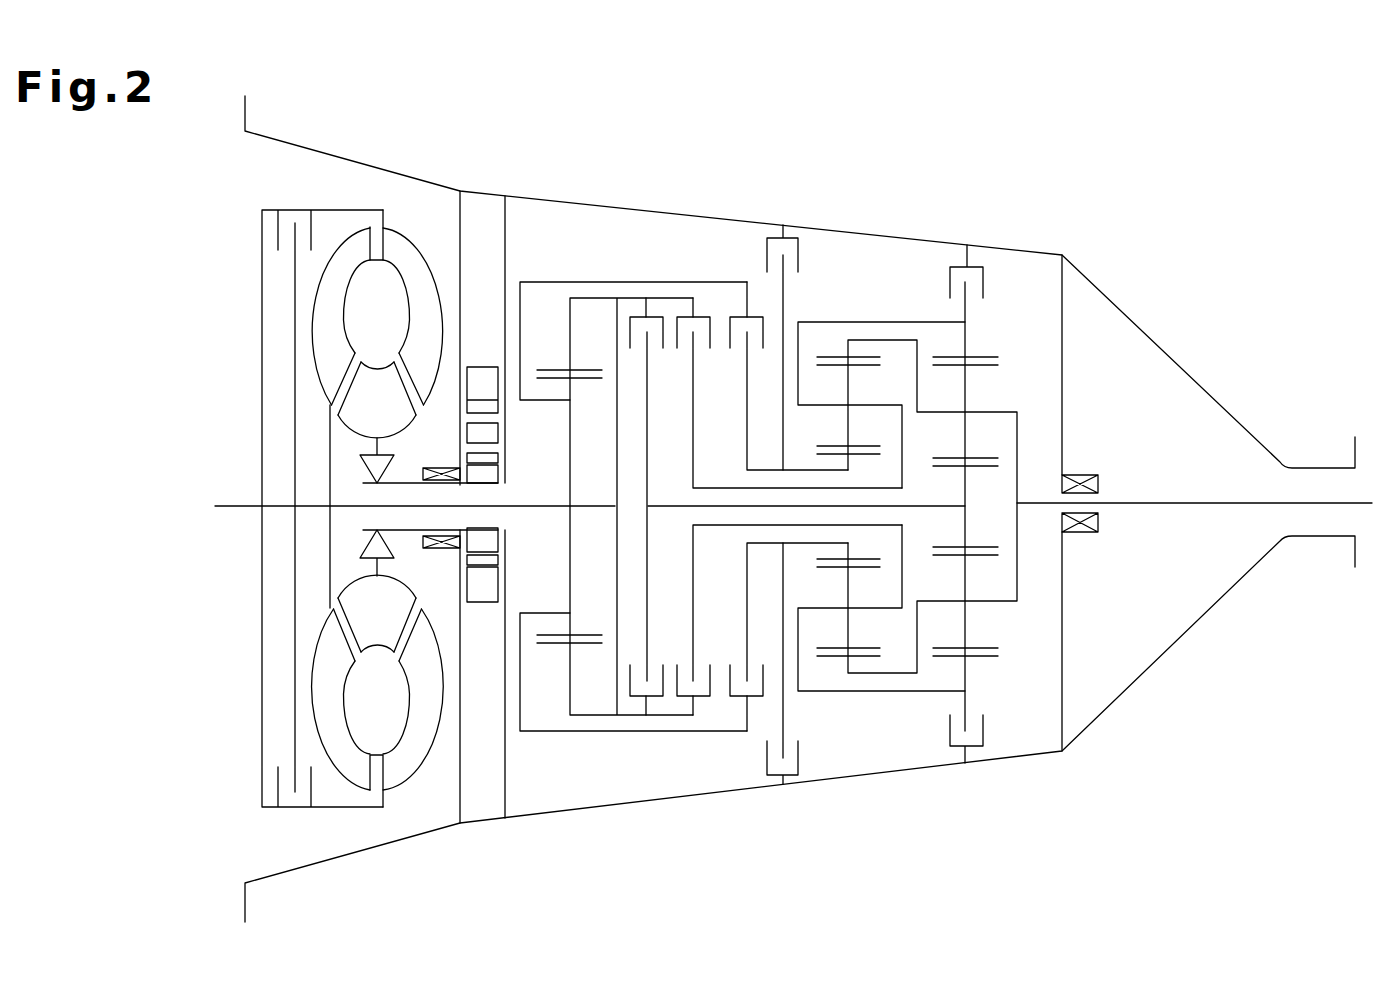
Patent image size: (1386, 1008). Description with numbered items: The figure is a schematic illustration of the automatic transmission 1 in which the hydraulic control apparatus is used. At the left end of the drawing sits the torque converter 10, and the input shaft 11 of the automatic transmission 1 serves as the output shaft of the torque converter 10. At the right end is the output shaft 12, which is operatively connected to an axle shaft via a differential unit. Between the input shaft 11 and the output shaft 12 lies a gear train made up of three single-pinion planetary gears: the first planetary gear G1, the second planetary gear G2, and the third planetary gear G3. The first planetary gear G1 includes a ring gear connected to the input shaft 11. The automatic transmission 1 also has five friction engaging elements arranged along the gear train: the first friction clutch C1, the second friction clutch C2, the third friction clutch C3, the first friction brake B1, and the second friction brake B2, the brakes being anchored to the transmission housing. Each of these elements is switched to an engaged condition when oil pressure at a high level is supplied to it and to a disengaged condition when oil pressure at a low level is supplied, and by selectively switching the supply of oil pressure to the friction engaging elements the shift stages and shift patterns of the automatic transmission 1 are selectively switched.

The automatic transmission 1 is at (920, 799).
The torque converter 10 is at (413, 243).
The input shaft 11 is at (317, 507).
The output shaft 12 is at (1255, 503).
The first planetary gear G1 is at (534, 252).
The second planetary gear G2 is at (830, 304).
The third planetary gear G3 is at (996, 667).
The first friction clutch C1 is at (642, 317).
The second friction clutch C2 is at (703, 317).
The third friction clutch C3 is at (757, 317).
The first friction brake B1 is at (786, 238).
The second friction brake B2 is at (975, 262).